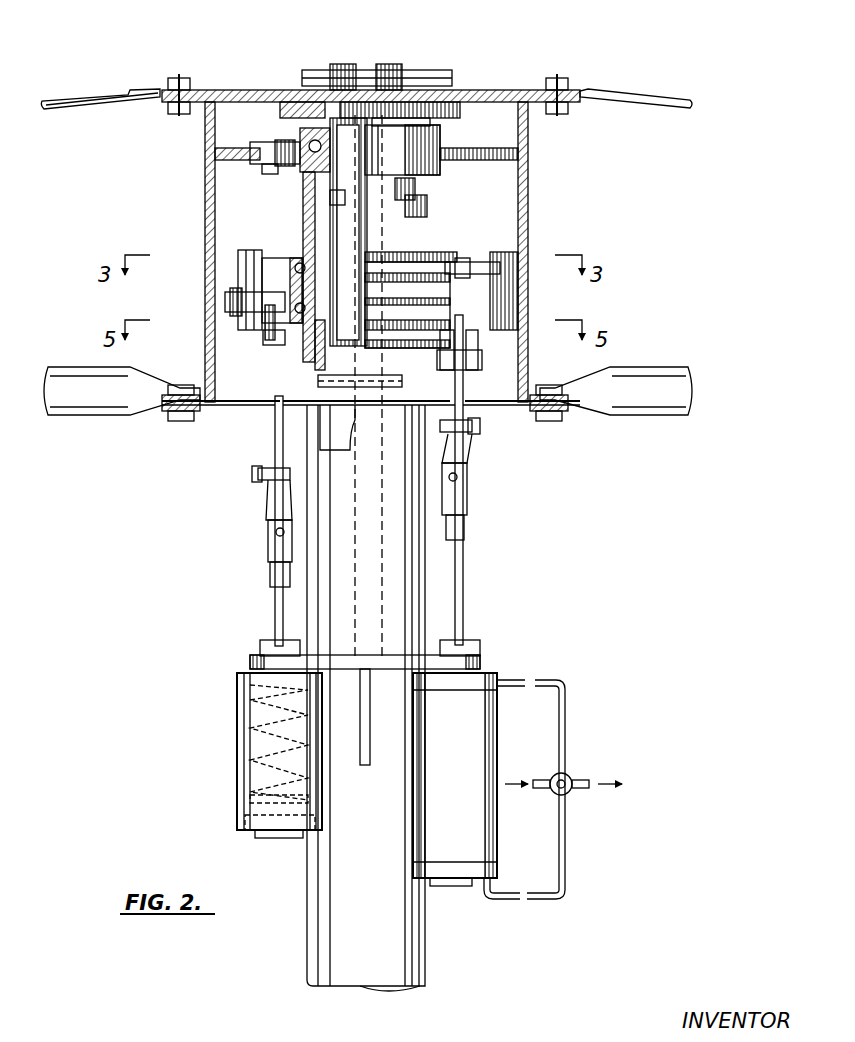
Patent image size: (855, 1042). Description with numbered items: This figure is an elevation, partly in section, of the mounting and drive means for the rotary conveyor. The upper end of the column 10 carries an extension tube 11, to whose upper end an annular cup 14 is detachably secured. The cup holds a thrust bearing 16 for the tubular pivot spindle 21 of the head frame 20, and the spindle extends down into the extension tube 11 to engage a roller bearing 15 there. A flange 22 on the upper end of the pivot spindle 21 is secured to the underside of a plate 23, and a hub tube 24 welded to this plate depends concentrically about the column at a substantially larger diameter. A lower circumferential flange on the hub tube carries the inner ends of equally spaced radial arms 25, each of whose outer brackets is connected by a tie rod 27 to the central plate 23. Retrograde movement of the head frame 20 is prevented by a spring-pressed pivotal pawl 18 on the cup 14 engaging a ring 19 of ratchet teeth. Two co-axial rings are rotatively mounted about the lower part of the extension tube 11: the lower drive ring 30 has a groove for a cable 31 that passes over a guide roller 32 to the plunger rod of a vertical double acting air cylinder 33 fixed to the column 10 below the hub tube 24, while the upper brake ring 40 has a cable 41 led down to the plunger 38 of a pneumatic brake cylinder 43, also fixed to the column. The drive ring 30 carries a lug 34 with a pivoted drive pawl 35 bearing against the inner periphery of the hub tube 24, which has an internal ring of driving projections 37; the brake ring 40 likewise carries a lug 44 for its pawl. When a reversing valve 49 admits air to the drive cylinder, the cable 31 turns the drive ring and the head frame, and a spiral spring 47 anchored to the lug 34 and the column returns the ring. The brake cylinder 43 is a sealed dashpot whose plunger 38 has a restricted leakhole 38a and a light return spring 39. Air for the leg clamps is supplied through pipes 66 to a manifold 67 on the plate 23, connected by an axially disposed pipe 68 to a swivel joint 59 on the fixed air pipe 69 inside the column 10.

The column 10 is at (322, 884).
The extension tube 11 is at (416, 190).
The annular cup 14 is at (420, 135).
The roller bearing 15 is at (306, 228).
The thrust bearing 16 is at (300, 132).
The spring-pressed pivotal pawl 18 is at (270, 156).
The ring of ratchet teeth 19 is at (207, 158).
The head frame 20 is at (106, 78).
The tubular pivot spindle 21 is at (336, 212).
The flange 22 is at (462, 104).
The plate 23 is at (228, 90).
The hub tube 24 is at (528, 172).
The radial arms 25 is at (75, 368).
The tie rod 27 is at (80, 105).
The drive ring 30 is at (410, 320).
The cable 31 is at (462, 408).
The guide roller 32 is at (464, 372).
The double acting air cylinder 33 is at (468, 680).
The lug 34 is at (226, 304).
The drive pawl 35 is at (262, 290).
The driving projections 37 is at (528, 288).
The plunger 38 is at (245, 822).
The restricted leakhole 38a is at (248, 797).
The return spring 39 is at (237, 722).
The brake ring 40 is at (440, 256).
The cable 41 is at (300, 262).
The pneumatic brake cylinder 43 is at (237, 708).
The lug 44 is at (474, 264).
The spiral spring 47 is at (278, 345).
The reversing valve 49 is at (566, 778).
The swivel joint 59 is at (318, 380).
The air pipe 66 is at (318, 72).
The manifold 67 is at (362, 70).
The axially disposed pipe 68 is at (400, 212).
The fixed air pipe 69 is at (345, 420).